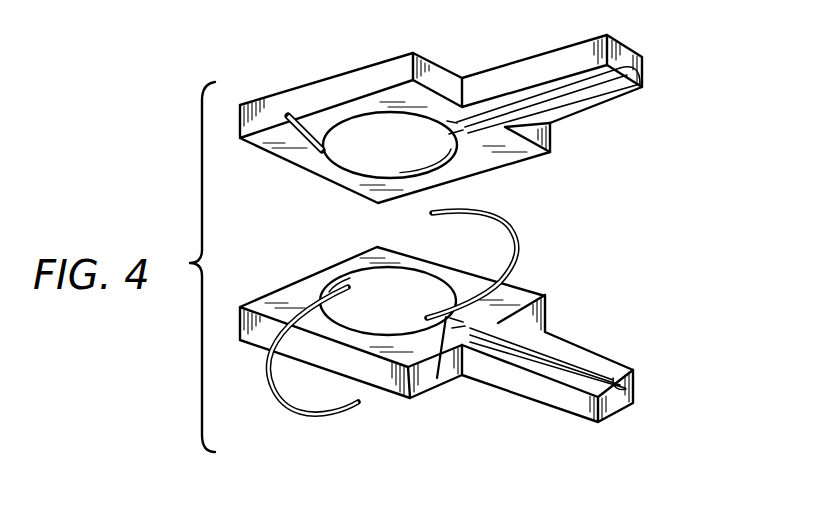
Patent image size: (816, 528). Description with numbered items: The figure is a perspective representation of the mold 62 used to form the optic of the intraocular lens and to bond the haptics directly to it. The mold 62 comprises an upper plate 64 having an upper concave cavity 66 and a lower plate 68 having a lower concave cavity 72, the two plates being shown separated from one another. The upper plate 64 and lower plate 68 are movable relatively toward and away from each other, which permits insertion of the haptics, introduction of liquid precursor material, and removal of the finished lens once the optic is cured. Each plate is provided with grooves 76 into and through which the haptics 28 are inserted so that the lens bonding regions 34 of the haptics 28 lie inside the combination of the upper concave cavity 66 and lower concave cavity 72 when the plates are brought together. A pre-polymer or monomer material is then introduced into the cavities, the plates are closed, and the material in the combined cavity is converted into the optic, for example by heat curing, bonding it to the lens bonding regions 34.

The mold 62 is at (636, 233).
The upper plate 64 is at (372, 76).
The upper concave cavity 66 is at (421, 155).
The lower plate 68 is at (540, 296).
The lower concave cavity 72 is at (372, 293).
The grooves 76 is at (311, 143).
The haptic 28 is at (521, 244).
The lens bonding region 34 is at (437, 378).